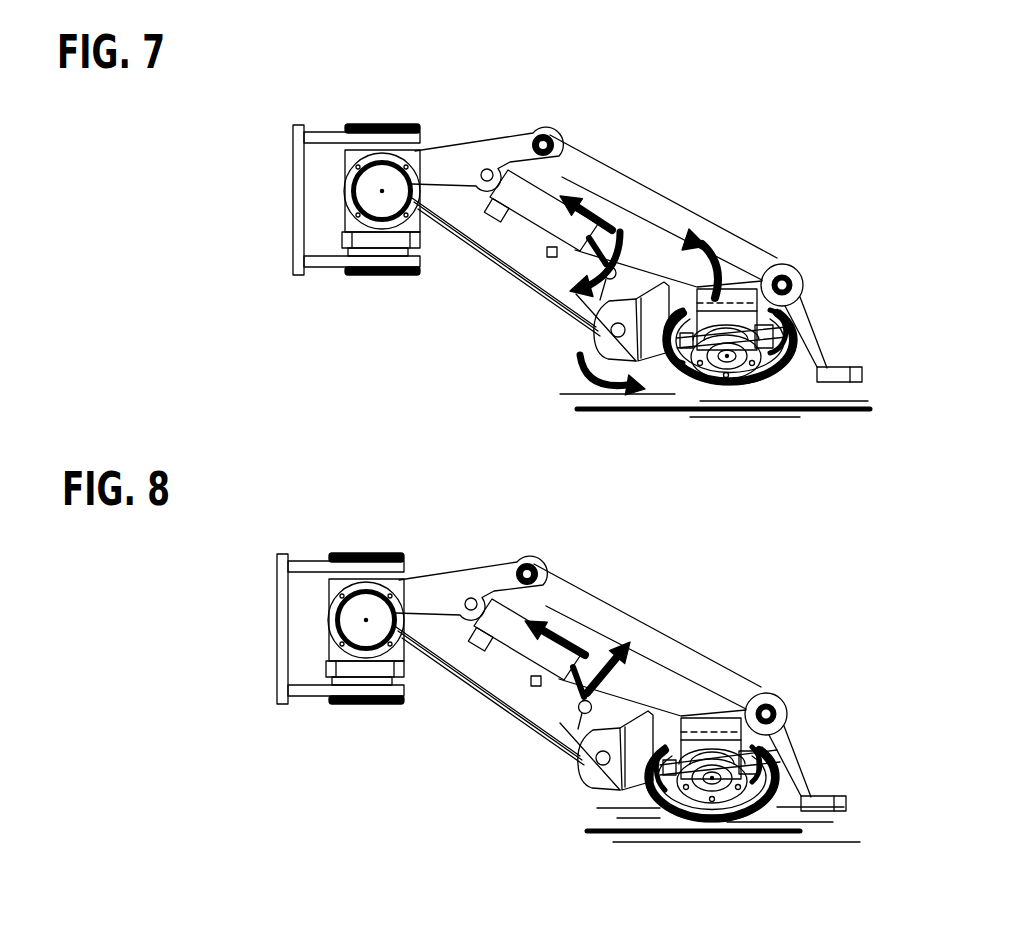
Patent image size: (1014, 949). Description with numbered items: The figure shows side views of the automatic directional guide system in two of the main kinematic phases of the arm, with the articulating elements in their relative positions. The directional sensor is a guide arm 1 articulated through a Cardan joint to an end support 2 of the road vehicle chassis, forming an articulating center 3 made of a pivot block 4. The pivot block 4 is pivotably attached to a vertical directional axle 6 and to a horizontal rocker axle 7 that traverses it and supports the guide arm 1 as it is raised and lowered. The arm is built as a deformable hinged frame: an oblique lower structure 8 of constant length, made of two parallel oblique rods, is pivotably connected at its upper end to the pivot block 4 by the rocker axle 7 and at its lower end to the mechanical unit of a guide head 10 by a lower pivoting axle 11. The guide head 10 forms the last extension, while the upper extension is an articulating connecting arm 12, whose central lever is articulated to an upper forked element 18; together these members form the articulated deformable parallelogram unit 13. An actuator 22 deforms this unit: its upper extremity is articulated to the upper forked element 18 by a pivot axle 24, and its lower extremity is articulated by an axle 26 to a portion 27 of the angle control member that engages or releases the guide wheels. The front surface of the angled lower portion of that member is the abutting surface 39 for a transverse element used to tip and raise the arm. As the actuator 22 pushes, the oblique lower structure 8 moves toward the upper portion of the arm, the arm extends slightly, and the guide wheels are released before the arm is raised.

In FIG. 7, the guide arm 1 is at (757, 172).
In FIG. 8, the guide arm 1 is at (744, 618).
In FIG. 7, the end support 2 is at (300, 172).
In FIG. 8, the end support 2 is at (225, 629).
In FIG. 7, the articulating center 3 is at (262, 279).
In FIG. 8, the articulating center 3 is at (279, 706).
In FIG. 7, the pivot block 4 is at (445, 105).
In FIG. 8, the pivot block 4 is at (371, 516).
In FIG. 7, the vertical directional axle 6 is at (381, 124).
In FIG. 8, the vertical directional axle 6 is at (366, 518).
In FIG. 7, the horizontal rocker axle 7 is at (427, 258).
In FIG. 8, the horizontal rocker axle 7 is at (381, 691).
In FIG. 7, the oblique lower structure 8 is at (503, 308).
In FIG. 8, the oblique lower structure 8 is at (490, 728).
In FIG. 7, the guide head 10 is at (673, 413).
In FIG. 8, the guide head 10 is at (704, 831).
In FIG. 7, the lower pivoting axle 11 is at (598, 412).
In FIG. 8, the lower pivoting axle 11 is at (555, 817).
In FIG. 7, the articulating connecting arm 12 is at (666, 207).
In FIG. 8, the articulating connecting arm 12 is at (660, 636).
In FIG. 7, the articulated deformable parallelogram unit 13 is at (824, 246).
In FIG. 8, the articulated deformable parallelogram unit 13 is at (808, 694).
In FIG. 7, the upper forked element 18 is at (465, 155).
In FIG. 8, the upper forked element 18 is at (471, 556).
In FIG. 7, the actuator 22 is at (546, 212).
In FIG. 8, the actuator 22 is at (531, 600).
In FIG. 7, the pivot axle 24 is at (489, 165).
In FIG. 8, the pivot axle 24 is at (501, 551).
In FIG. 7, the axle 26 is at (597, 315).
In FIG. 8, the axle 26 is at (528, 788).
In FIG. 7, the portion of angle control member 27 is at (687, 292).
In FIG. 8, the portion of angle control member 27 is at (675, 664).
In FIG. 7, the abutting surface 39 is at (643, 413).
In FIG. 8, the abutting surface 39 is at (605, 830).